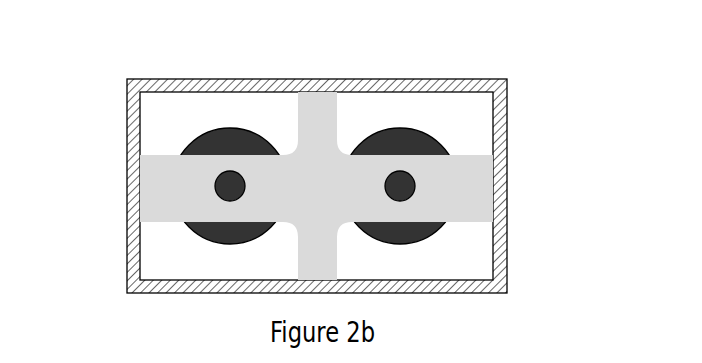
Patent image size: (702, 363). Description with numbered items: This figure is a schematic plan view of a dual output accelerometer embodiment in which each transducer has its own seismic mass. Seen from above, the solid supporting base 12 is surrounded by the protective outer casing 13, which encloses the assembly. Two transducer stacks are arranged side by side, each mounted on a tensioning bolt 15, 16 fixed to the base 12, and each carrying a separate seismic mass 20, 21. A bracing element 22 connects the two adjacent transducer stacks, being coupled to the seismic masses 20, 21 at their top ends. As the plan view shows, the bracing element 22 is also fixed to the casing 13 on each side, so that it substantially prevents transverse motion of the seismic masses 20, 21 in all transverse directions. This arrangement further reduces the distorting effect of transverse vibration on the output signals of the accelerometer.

The solid supporting base 12 is at (153, 118).
The outer casing 13 is at (502, 115).
The tensioning bolt 15 is at (228, 186).
The tensioning bolt 16 is at (401, 187).
The seismic mass 20 is at (208, 233).
The seismic mass 21 is at (425, 229).
The bracing element 22 is at (472, 195).